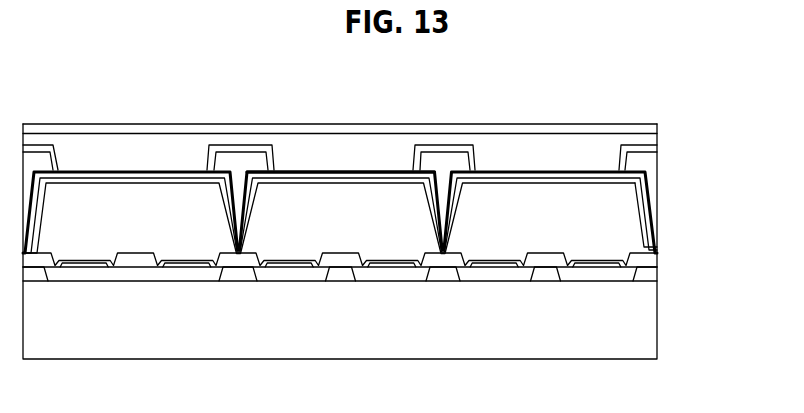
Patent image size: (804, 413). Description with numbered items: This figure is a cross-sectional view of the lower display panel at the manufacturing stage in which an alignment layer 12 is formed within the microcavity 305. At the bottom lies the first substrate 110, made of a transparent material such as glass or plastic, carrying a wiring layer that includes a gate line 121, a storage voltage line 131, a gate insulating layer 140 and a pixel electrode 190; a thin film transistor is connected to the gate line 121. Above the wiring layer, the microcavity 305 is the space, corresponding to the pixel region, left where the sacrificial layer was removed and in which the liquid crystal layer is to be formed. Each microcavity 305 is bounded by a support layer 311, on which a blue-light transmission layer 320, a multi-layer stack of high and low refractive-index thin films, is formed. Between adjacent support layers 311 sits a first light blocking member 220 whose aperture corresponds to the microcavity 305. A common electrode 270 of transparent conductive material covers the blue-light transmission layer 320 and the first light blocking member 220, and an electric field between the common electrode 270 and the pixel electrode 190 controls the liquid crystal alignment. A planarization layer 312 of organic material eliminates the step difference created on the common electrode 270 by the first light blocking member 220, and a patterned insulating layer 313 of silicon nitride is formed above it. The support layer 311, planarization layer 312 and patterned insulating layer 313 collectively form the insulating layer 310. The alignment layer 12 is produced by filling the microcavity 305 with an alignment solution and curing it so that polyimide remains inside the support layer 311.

The first substrate 110 is at (394, 338).
The storage voltage line 131 is at (342, 275).
The gate line 121 is at (445, 275).
The gate insulating layer 140 is at (573, 275).
The pixel electrode 190 is at (498, 264).
The microcavity 305 is at (600, 231).
The alignment layer 12 is at (638, 235).
The first light blocking member 220 is at (653, 227).
The blue-light transmission layer 320 is at (647, 205).
The support layer 311 is at (650, 184).
The planarization layer 312 is at (613, 157).
The patterned insulating layer 313 is at (650, 129).
The insulating layer 310 is at (721, 129).
The common electrode 270 is at (519, 170).